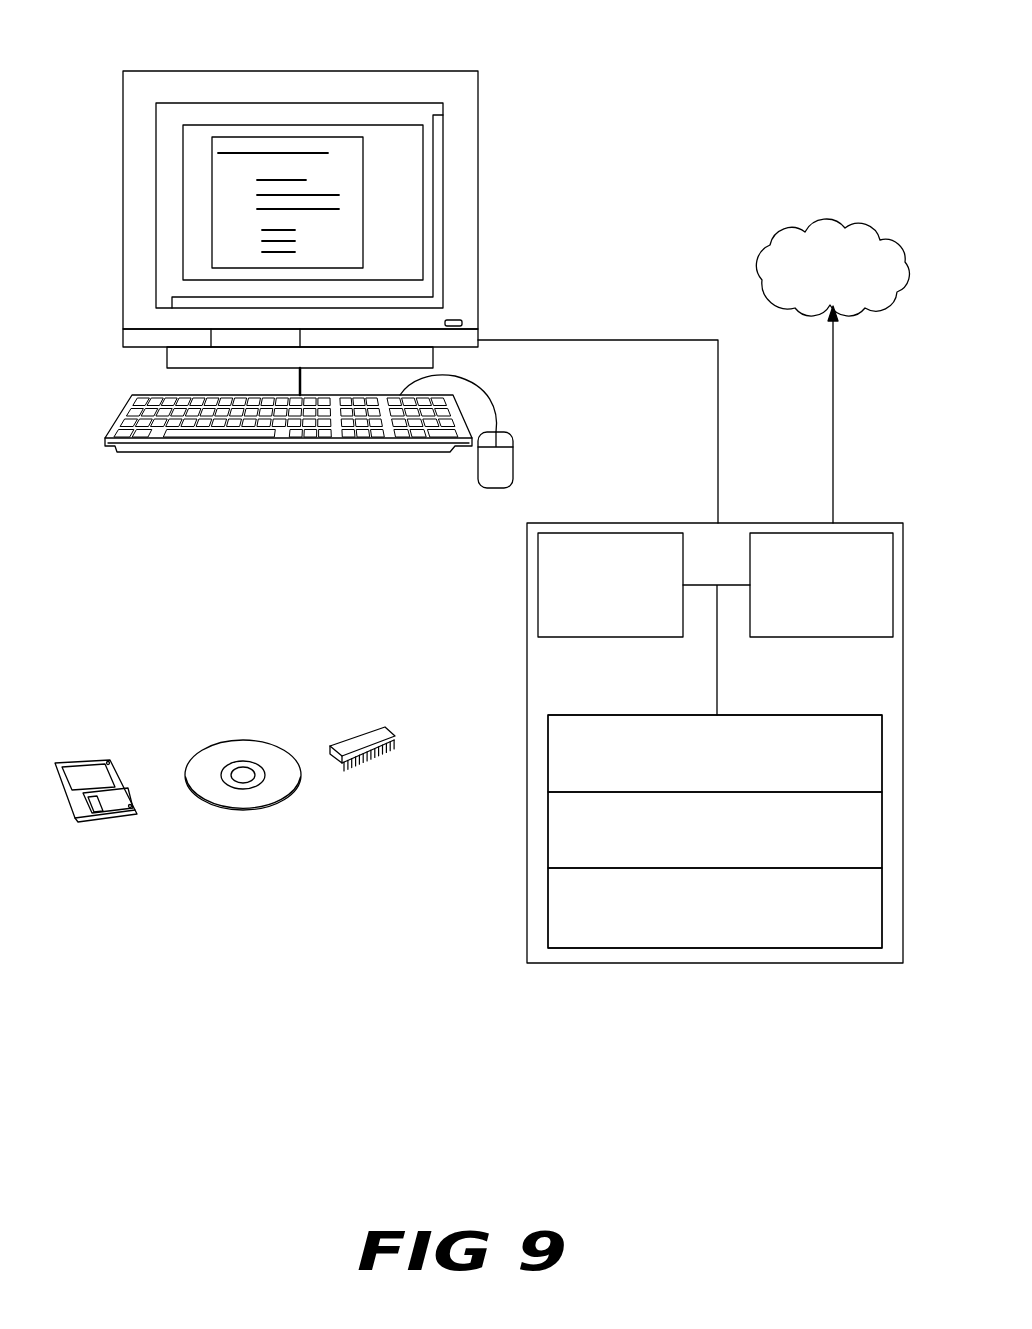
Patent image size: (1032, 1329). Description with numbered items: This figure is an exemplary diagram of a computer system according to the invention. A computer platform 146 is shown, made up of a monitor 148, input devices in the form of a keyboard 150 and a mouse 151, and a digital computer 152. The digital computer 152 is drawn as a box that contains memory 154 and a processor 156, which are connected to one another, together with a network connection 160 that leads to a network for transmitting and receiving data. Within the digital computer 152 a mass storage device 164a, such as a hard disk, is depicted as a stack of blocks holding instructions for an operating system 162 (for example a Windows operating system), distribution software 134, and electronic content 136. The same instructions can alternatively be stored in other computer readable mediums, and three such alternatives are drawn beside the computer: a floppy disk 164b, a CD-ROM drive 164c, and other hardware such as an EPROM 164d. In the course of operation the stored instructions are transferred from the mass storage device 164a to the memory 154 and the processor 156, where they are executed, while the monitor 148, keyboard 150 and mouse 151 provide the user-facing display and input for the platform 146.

The computer platform 146 is at (553, 83).
The monitor 148 is at (478, 207).
The keyboard 150 is at (288, 452).
The mouse 151 is at (513, 443).
The digital computer 152 is at (527, 625).
The memory 154 is at (640, 637).
The processor 156 is at (785, 637).
The network connection 160 is at (833, 375).
The operating system 162 is at (548, 754).
The distribution software 134 is at (555, 806).
The electronic content 136 is at (555, 884).
The mass storage device 164a is at (602, 948).
The floppy disk 164b is at (100, 767).
The CD-ROM drive 164c is at (241, 745).
The EPROM 164d is at (352, 742).